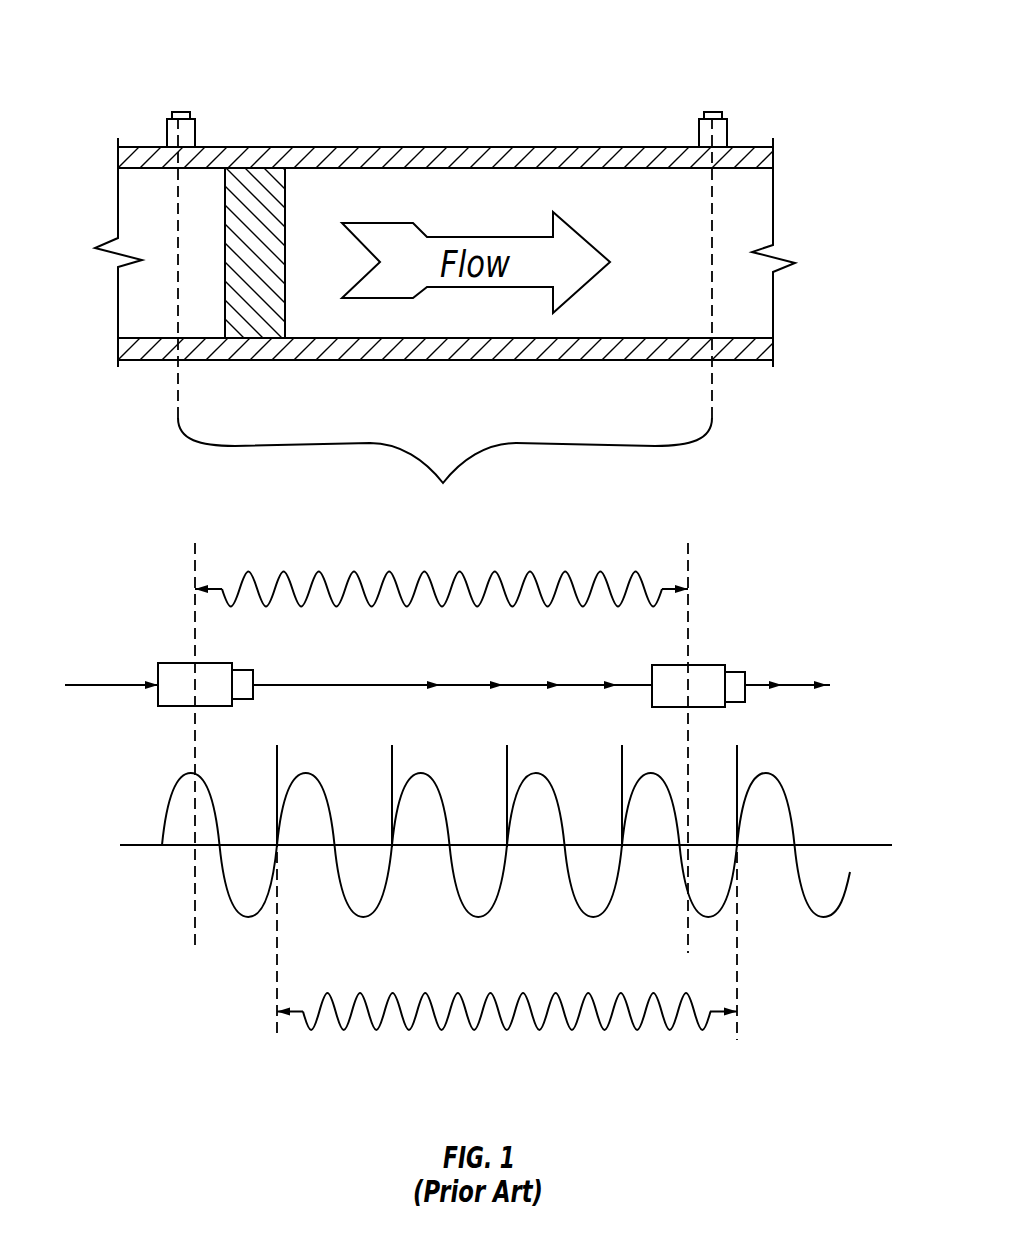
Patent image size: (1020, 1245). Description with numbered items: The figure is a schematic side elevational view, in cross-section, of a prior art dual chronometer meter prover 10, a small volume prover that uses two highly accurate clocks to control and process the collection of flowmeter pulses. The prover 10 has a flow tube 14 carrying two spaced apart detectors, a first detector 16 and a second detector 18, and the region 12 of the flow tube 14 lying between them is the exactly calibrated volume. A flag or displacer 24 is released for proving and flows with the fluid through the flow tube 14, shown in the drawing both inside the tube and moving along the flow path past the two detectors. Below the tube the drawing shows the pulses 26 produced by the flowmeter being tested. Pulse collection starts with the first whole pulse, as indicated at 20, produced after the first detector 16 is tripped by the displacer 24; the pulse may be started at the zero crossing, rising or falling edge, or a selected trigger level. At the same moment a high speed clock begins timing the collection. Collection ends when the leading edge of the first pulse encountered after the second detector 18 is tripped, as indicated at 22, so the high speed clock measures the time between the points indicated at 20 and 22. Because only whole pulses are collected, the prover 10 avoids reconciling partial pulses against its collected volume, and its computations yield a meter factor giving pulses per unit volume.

The dual chronometer meter prover 10 is at (118, 42).
The region 12 is at (445, 318).
The flow tube 14 is at (553, 160).
The first detector 16 is at (164, 136).
The second detector 18 is at (728, 136).
The first whole pulse indication 20 is at (276, 983).
The end of pulse collection indication 22 is at (739, 988).
The flag or displacer 24 is at (257, 205).
The pulses 26 is at (163, 808).